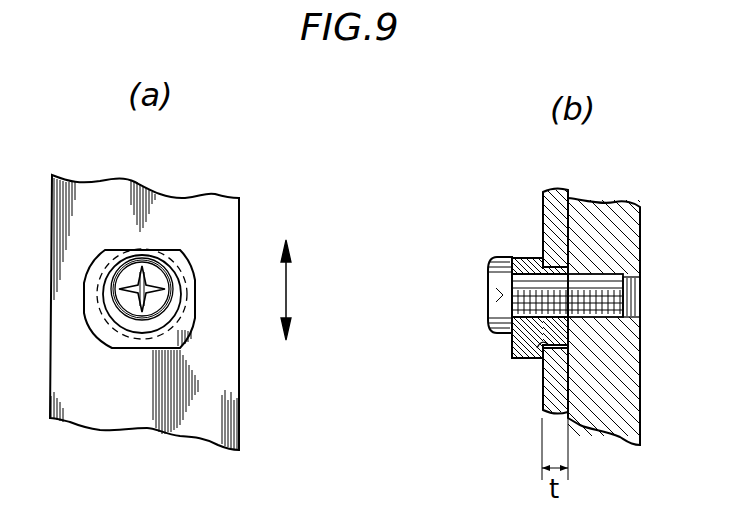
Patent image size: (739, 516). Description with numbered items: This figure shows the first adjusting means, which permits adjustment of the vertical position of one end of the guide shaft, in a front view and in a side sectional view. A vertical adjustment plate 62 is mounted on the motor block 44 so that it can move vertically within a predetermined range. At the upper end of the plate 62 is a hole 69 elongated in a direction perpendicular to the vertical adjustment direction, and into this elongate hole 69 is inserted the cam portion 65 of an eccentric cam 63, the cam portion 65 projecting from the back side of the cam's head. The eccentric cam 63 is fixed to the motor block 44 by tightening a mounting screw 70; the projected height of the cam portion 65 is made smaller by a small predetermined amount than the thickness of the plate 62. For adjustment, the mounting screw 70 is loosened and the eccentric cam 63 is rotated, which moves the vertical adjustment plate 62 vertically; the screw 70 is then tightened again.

The vertical adjustment plate 62 is at (230, 422).
The eccentric cam 63 is at (104, 248).
The cam portion 65 is at (180, 297).
The elongate hole 69 is at (187, 313).
The mounting screw 70 is at (117, 316).
The motor block 44 is at (625, 398).